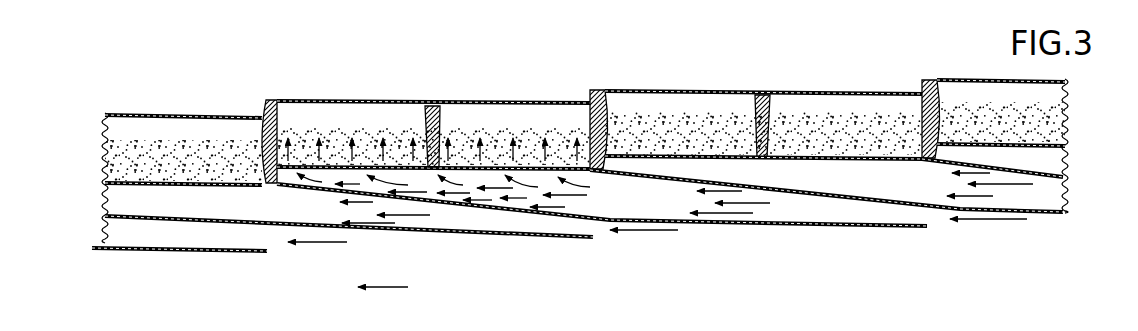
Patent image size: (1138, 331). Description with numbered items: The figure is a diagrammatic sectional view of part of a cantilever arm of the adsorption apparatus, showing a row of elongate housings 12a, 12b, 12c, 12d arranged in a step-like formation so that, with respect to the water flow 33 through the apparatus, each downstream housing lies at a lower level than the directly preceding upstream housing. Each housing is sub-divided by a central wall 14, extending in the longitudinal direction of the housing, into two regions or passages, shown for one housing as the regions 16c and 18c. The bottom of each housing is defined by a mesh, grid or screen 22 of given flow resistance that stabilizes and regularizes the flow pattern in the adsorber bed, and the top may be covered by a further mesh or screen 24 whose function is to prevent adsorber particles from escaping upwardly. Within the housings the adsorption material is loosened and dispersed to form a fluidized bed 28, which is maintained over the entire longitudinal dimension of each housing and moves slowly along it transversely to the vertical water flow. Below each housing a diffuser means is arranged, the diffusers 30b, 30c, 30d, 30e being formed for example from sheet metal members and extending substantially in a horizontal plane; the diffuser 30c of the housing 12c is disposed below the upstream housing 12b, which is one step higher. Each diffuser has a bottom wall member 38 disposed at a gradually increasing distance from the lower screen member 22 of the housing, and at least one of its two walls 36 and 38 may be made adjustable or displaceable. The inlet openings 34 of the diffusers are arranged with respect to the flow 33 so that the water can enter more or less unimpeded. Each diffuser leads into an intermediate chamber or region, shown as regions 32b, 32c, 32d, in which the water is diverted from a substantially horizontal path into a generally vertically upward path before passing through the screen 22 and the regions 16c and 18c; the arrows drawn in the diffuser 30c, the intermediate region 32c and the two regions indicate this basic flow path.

The housing 12a is at (923, 83).
The housing 12b is at (590, 90).
The housing 12c is at (263, 106).
The housing 12d is at (186, 87).
The central wall 14 is at (425, 105).
The region or passage 16c is at (517, 115).
The region or passage 18c is at (353, 112).
The mesh, grid or screen 22 is at (897, 162).
The mesh, screen or grid 24 is at (650, 88).
The fluidized bed 28 is at (560, 133).
The diffuser means 30b is at (1035, 197).
The diffuser means 30c is at (820, 212).
The diffuser means 30d is at (468, 220).
The diffuser means 30e is at (213, 238).
The intermediate chamber or region 32b is at (860, 182).
The intermediate chamber or region 32c is at (493, 182).
The intermediate chamber or region 32d is at (230, 210).
The flow of water 33 is at (395, 287).
The inlet opening 34 is at (593, 228).
The wall of diffuser means 36 is at (723, 179).
The bottom wall member 38 is at (722, 225).